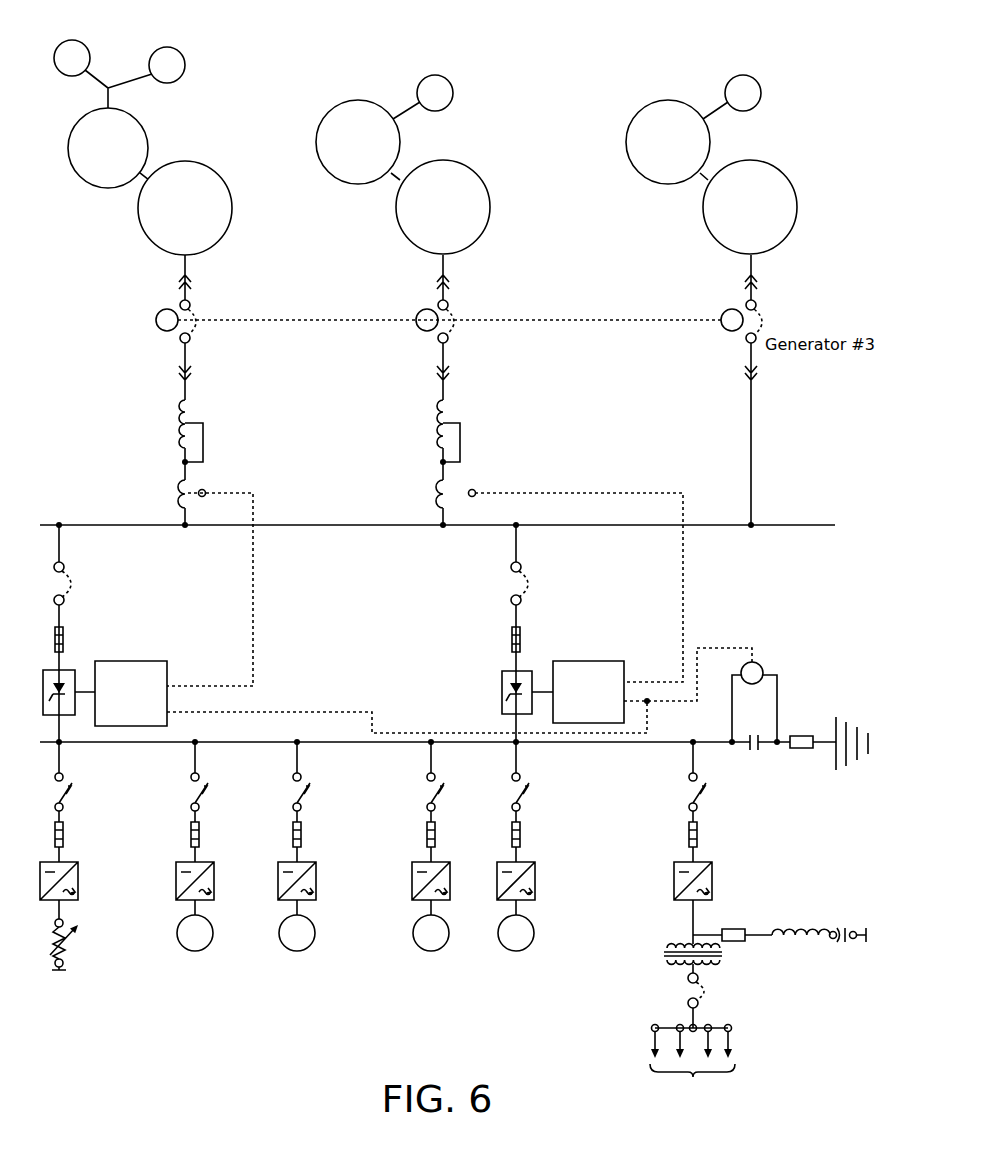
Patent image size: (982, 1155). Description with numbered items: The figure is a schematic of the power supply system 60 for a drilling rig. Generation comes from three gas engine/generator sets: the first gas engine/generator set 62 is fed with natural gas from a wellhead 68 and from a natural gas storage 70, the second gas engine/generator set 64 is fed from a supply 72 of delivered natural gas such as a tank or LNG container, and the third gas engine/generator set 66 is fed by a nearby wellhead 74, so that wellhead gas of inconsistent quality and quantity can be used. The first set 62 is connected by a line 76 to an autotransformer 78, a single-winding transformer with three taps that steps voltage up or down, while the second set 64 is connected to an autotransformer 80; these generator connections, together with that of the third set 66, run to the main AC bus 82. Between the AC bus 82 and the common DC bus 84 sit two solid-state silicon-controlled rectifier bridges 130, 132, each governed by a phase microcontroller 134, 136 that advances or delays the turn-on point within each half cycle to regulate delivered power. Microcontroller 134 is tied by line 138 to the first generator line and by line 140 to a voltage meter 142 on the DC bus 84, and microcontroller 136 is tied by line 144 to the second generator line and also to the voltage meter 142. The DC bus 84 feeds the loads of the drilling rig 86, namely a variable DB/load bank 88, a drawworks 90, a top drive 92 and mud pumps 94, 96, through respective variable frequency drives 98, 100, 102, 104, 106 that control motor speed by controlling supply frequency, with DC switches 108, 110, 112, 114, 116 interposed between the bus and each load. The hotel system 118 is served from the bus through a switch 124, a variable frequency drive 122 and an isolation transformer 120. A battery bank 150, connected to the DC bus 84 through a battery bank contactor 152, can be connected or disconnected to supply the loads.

The power supply system 60 is at (748, 598).
The first gas engine/generator set 62 is at (124, 202).
The second gas engine/generator set 64 is at (384, 192).
The third gas engine/generator set 66 is at (702, 192).
The wellhead 68 is at (184, 57).
The natural gas storage 70 is at (84, 43).
The supply of natural gas 72 is at (440, 76).
The wellhead 74 is at (748, 76).
The line 76 is at (181, 374).
The autotransformer 78 is at (183, 446).
The autotransformer 80 is at (440, 443).
The main AC bus 82 is at (731, 525).
The common DC bus 84 is at (671, 742).
The drilling rig loads 86 is at (370, 982).
The variable DB/load bank 88 is at (76, 946).
The drawworks 90 is at (213, 926).
The top drive 92 is at (316, 935).
The mud pump 94 is at (450, 932).
The mud pump 96 is at (538, 932).
The variable frequency drive 98 is at (80, 878).
The variable frequency drive 100 is at (177, 885).
The variable frequency drive 102 is at (318, 878).
The variable frequency drive 104 is at (413, 885).
The variable frequency drive 106 is at (538, 878).
The DC switch 108 is at (80, 783).
The DC switch 110 is at (189, 795).
The DC switch 112 is at (291, 788).
The DC switch 114 is at (425, 795).
The DC switch 116 is at (528, 779).
The hotel system 118 is at (650, 1046).
The isolation transformer 120 is at (722, 955).
The variable frequency drive 122 is at (673, 885).
The switch 124 is at (690, 795).
The silicon-controlled rectifier bridge 130 is at (68, 671).
The silicon-controlled rectifier bridge 132 is at (502, 690).
The phase microcontroller 134 is at (143, 661).
The phase microcontroller 136 is at (598, 661).
The line 138 is at (253, 583).
The line 140 is at (318, 712).
The voltage meter 142 is at (761, 664).
The line 144 is at (685, 572).
The battery bank 150 is at (845, 772).
The battery bank contactor 152 is at (752, 756).